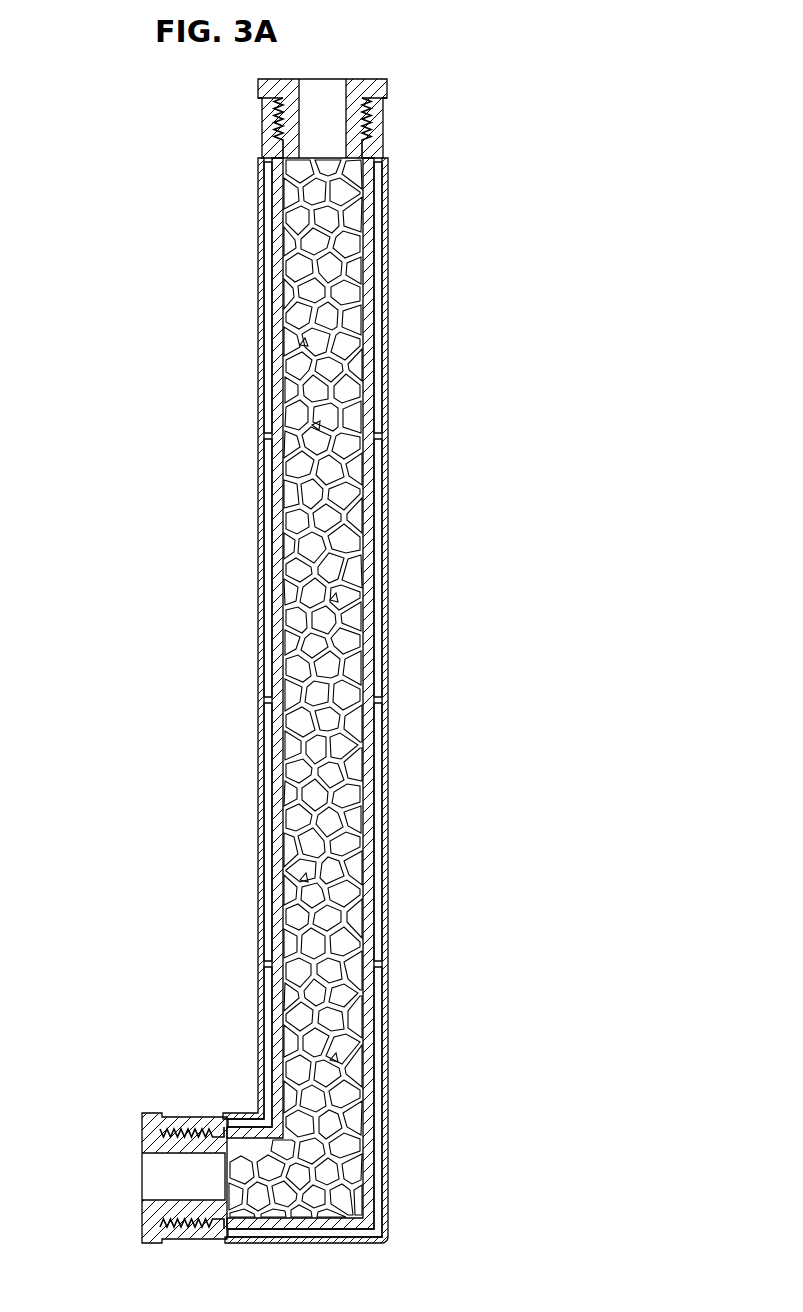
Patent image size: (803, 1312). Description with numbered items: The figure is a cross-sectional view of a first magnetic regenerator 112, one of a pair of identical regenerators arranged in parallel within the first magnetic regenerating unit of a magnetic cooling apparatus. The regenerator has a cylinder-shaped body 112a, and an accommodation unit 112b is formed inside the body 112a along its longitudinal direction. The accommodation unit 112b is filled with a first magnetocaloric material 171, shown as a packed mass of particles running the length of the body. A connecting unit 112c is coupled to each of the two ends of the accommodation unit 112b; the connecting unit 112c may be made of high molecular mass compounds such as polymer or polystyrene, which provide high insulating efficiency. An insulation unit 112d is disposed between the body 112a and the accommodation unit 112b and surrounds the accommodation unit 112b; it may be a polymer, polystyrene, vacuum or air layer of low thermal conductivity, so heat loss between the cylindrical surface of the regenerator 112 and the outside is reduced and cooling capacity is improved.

The first magnetic regenerator 112 is at (69, 276).
The body 112a is at (276, 297).
The accommodation unit 112b is at (320, 426).
The connecting unit 112c is at (266, 86).
The insulation unit 112d is at (272, 222).
The first magnetocaloric material 171 is at (323, 541).